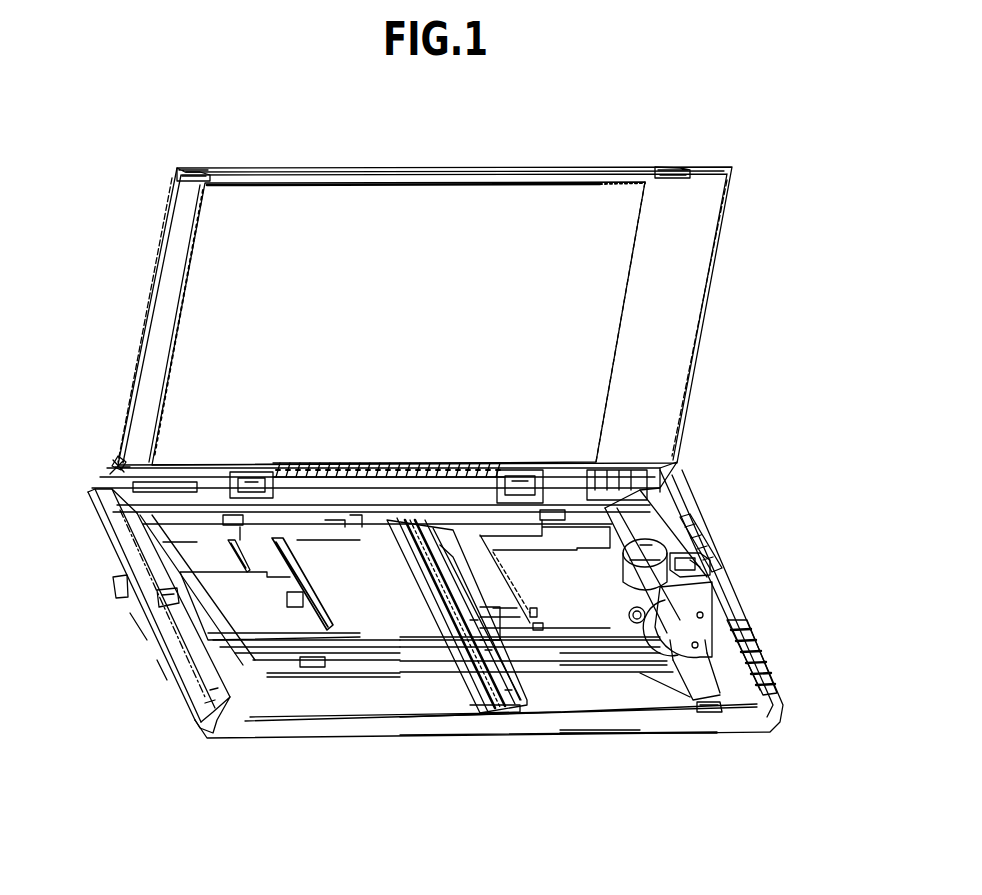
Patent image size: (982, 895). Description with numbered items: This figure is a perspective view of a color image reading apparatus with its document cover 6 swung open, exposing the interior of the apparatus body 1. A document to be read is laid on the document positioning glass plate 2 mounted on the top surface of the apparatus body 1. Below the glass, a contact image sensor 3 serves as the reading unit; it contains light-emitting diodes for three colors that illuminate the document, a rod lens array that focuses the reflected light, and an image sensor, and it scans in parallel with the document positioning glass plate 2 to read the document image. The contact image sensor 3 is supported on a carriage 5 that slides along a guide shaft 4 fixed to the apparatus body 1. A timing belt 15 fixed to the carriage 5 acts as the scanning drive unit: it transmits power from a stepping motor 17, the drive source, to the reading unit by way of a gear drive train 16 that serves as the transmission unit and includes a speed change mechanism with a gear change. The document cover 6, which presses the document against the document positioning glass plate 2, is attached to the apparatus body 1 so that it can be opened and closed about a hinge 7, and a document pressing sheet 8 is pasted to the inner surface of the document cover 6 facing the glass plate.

The apparatus body 1 is at (750, 623).
The document positioning glass plate 2 is at (193, 561).
The contact image sensor 3 is at (472, 683).
The guide shaft 4 is at (232, 660).
The carriage 5 is at (437, 652).
The document cover 6 is at (180, 230).
The hinge 7 is at (116, 465).
The document pressing sheet 8 is at (203, 290).
The timing belt 15 is at (662, 633).
The gear drive train 16 is at (712, 564).
The stepping motor 17 is at (655, 560).